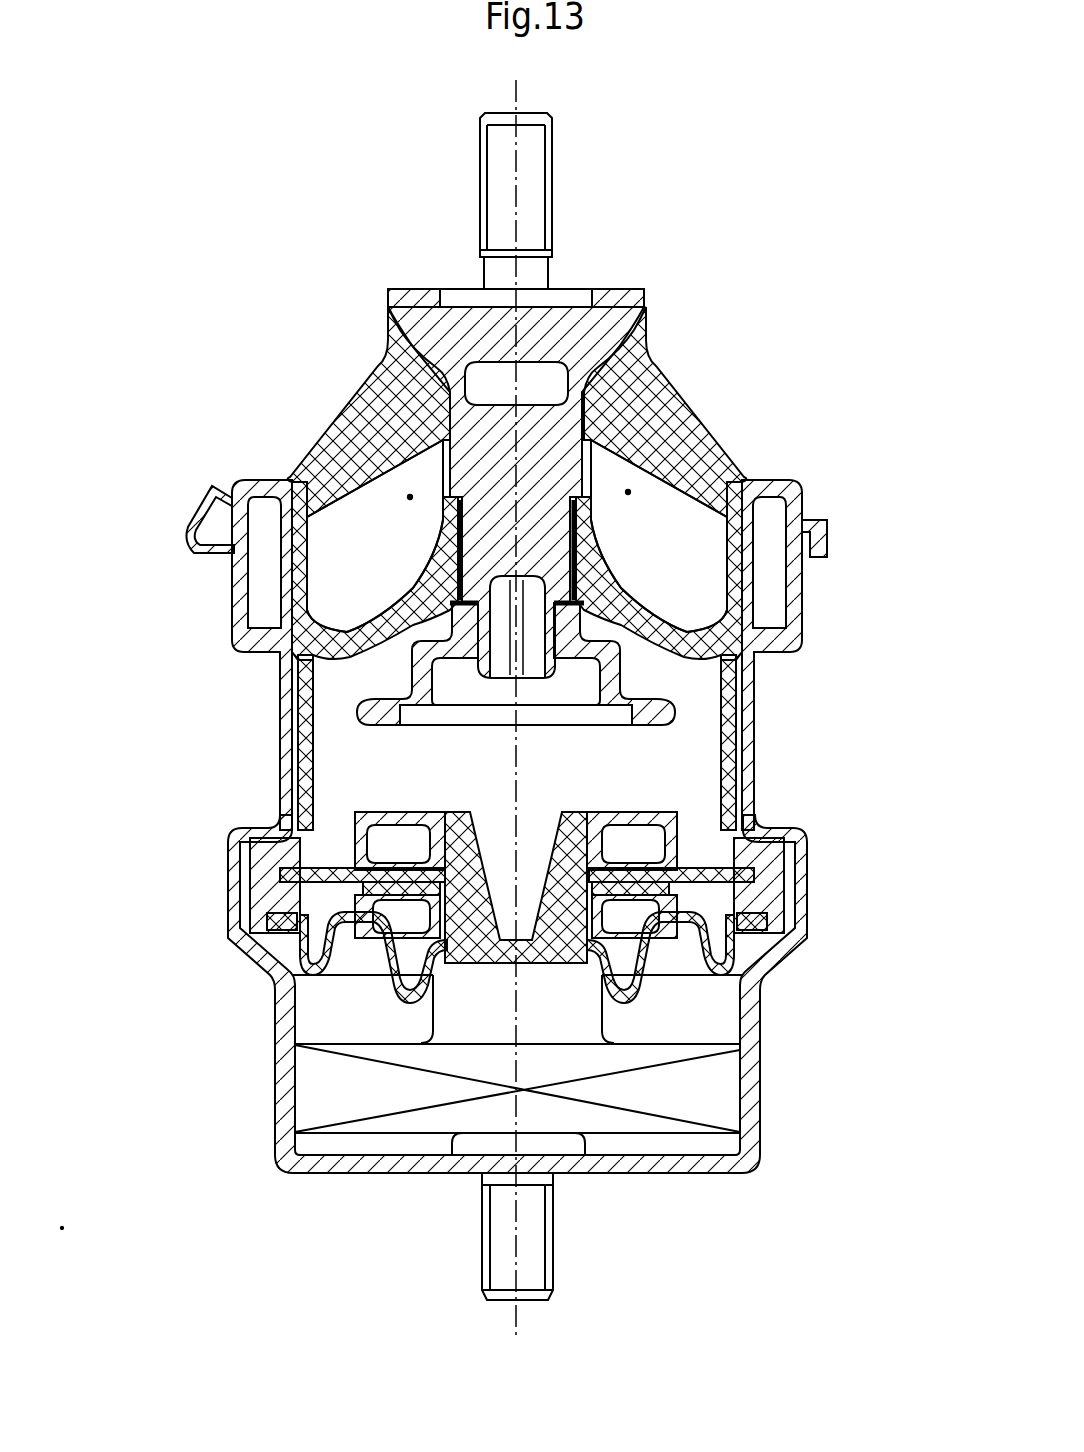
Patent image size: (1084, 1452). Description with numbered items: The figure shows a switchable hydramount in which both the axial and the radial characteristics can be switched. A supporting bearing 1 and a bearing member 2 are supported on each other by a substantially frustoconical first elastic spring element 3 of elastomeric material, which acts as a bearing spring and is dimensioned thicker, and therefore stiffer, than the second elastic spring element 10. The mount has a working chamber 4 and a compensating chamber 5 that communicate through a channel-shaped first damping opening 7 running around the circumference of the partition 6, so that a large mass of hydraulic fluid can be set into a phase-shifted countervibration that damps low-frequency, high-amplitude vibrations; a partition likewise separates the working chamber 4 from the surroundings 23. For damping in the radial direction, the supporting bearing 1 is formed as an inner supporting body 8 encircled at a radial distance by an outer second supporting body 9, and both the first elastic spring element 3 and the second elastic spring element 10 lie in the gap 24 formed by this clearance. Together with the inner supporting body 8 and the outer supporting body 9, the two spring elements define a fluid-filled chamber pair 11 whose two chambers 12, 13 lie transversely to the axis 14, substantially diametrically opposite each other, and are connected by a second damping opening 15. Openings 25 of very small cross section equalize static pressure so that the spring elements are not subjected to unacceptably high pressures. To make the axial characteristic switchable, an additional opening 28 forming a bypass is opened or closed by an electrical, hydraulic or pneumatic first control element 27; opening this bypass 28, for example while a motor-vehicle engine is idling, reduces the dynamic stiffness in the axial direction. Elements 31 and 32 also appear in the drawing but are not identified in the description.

The supporting bearing 1 is at (582, 333).
The bearing member 2 is at (740, 777).
The first elastic spring element 3 is at (653, 415).
The working chamber 4 is at (388, 777).
The compensating chamber 5 is at (405, 948).
The partition 6 is at (765, 905).
The first damping opening 7 is at (392, 853).
The inner supporting body 8 is at (440, 333).
The outer supporting body 9 is at (257, 483).
The second elastic spring element 10 is at (357, 636).
The chamber pair 11 is at (628, 492).
The chamber 12 is at (392, 594).
The chamber 13 is at (712, 609).
The axis 14 is at (516, 183).
The second damping opening 15 is at (260, 525).
The surroundings 23 is at (900, 969).
The gap 24 is at (674, 515).
The openings 25 is at (735, 652).
The first control element 27 is at (632, 1108).
The additional opening 28 is at (590, 920).
The plate 31 is at (745, 887).
The decoupling membrane 32 is at (471, 897).